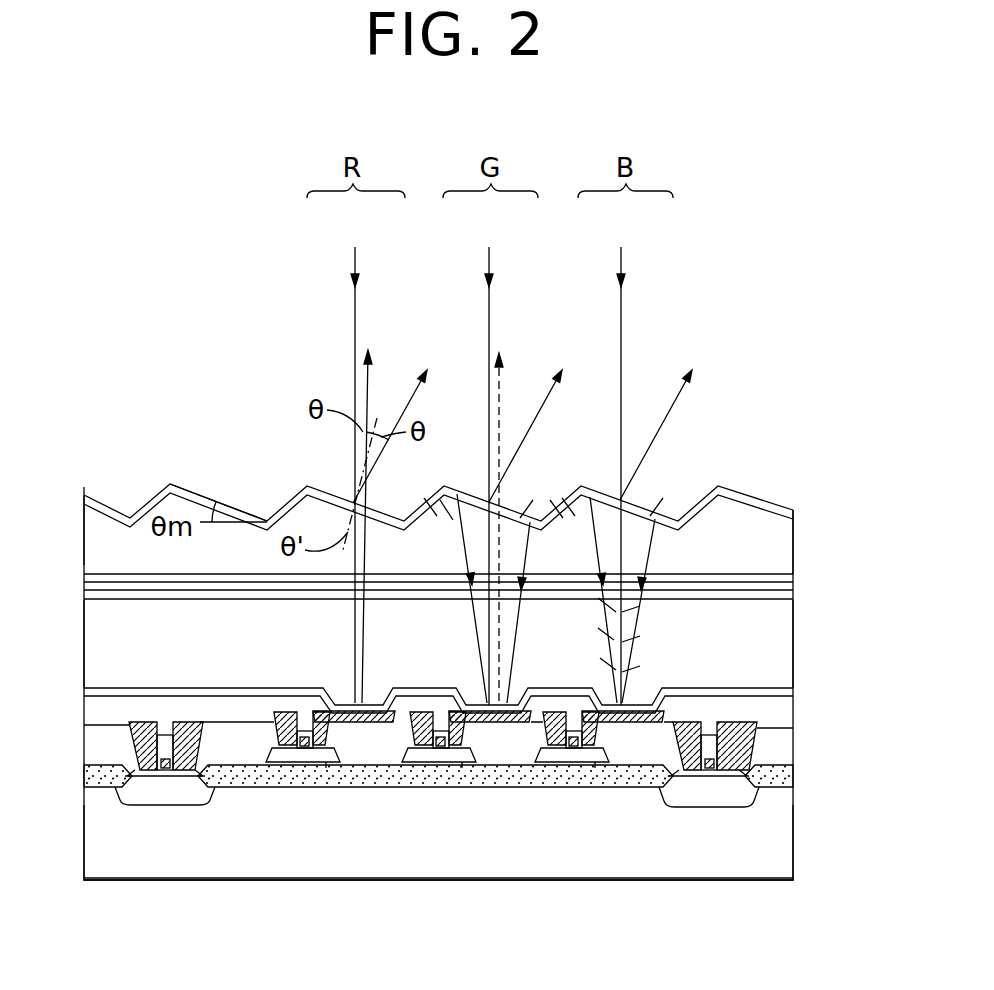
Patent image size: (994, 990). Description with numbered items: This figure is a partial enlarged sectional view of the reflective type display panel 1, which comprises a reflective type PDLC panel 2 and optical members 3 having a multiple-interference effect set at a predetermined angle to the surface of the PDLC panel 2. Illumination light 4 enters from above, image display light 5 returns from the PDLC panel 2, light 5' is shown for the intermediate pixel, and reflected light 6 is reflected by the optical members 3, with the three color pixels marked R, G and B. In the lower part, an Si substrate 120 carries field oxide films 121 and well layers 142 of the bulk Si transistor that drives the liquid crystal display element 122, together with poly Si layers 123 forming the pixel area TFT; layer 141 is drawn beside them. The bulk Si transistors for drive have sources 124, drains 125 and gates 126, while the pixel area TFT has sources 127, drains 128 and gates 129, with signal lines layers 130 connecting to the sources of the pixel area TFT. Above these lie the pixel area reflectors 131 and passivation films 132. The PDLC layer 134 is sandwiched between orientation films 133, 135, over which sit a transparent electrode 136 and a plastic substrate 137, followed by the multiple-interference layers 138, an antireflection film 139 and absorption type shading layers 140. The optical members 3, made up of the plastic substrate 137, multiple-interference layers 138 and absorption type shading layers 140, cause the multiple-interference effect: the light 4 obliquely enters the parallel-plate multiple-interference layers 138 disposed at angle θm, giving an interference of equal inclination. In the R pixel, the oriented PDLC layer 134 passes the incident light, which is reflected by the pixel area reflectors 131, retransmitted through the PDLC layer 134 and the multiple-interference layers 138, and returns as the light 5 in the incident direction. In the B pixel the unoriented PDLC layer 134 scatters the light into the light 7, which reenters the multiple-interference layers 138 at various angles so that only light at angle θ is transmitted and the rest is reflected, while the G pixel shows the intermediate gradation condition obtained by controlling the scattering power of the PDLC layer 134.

The reflective type display panel 1 is at (752, 467).
The reflective type PDLC panel 2 is at (70, 878).
The optical members 3 is at (70, 487).
The illumination light 4 is at (360, 283).
The image display light 5 is at (382, 499).
The reflected light 5' is at (517, 500).
The reflected light 6 is at (427, 372).
The scattered light 7 is at (465, 541).
The Si substrate 120 is at (782, 828).
The field oxide films 121 is at (793, 770).
The liquid crystal display element 122 is at (160, 797).
The poly Si layers 123 is at (258, 762).
The sources 124 is at (132, 805).
The drains 125 is at (192, 772).
The gates 126 is at (172, 777).
The sources 127 is at (283, 748).
The drains 128 is at (345, 722).
The gates 129 is at (462, 762).
The signal lines layers 130 is at (420, 745).
The pixel area reflectors 131 is at (373, 735).
The passivation films 132 is at (785, 717).
The orientation film 133 is at (793, 692).
The PDLC layer 134 is at (785, 650).
The orientation film 135 is at (800, 600).
The transparent electrode 136 is at (800, 591).
The plastic substrate 137 is at (785, 535).
The multiple-interference layers 138 is at (202, 497).
The antireflection film 139 is at (800, 580).
The absorption type shading layers 140 is at (285, 497).
The light shielding layer 141 is at (135, 721).
The well layers 142 is at (190, 721).